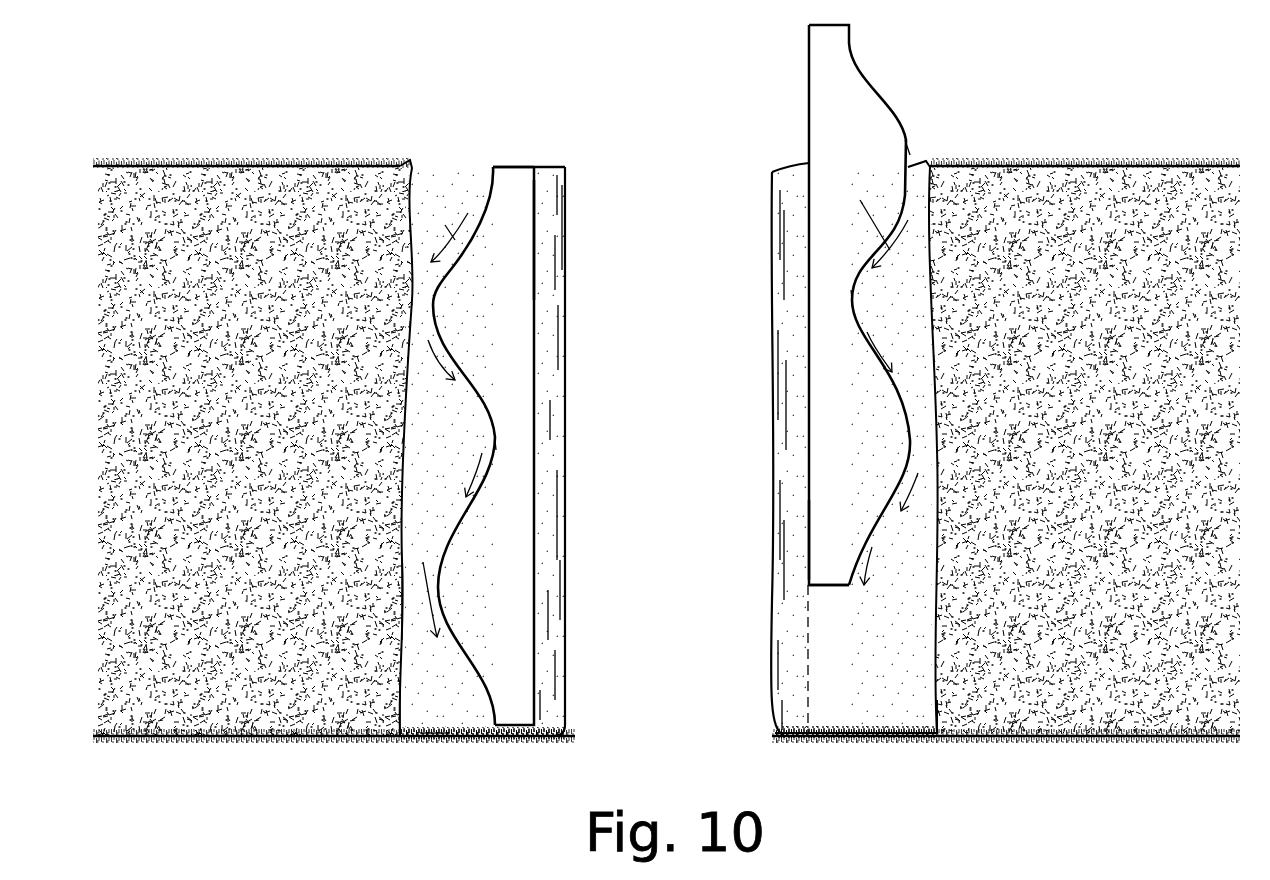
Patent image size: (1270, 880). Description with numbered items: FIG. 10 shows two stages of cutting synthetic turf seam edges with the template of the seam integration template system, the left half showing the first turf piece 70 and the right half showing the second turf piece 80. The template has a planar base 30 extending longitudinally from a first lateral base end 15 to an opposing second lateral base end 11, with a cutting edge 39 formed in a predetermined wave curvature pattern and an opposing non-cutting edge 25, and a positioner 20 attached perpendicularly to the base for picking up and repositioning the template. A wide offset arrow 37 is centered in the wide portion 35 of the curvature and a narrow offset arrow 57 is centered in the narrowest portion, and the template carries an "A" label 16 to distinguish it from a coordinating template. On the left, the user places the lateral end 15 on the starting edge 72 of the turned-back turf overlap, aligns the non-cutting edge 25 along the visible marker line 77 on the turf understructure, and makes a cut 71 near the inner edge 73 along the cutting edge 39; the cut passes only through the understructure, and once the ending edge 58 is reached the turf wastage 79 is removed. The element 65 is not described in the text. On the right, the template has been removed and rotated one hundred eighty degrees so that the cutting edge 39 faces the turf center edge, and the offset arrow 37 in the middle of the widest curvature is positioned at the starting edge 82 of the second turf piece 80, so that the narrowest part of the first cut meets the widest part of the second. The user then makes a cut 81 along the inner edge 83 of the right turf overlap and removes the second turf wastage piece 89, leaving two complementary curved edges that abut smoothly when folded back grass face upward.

The second lateral base end 11 is at (522, 736).
The first lateral base end 15 is at (525, 165).
The "A" label 16 is at (477, 597).
The positioner 20 is at (537, 702).
The non-cutting edge 25 is at (533, 198).
The planar base 30 is at (505, 732).
The wide portion 35 is at (910, 143).
The wide offset arrow 37 is at (440, 587).
The cutting edge 39 is at (437, 290).
The narrow offset arrow 57 is at (498, 441).
The ending edge 58 is at (433, 732).
The post side 65 is at (807, 540).
The first turf piece 70 is at (257, 757).
The cut 71 is at (452, 234).
The starting edge 72 is at (410, 160).
The inner edge 73 is at (402, 600).
The visible marker line 77 is at (537, 675).
The turf wastage 79 is at (427, 677).
The second turf piece 80 is at (1093, 758).
The cut 81 is at (880, 245).
The starting edge 82 is at (913, 165).
The inner edge 83 is at (938, 700).
The second turf wastage piece 89 is at (893, 282).